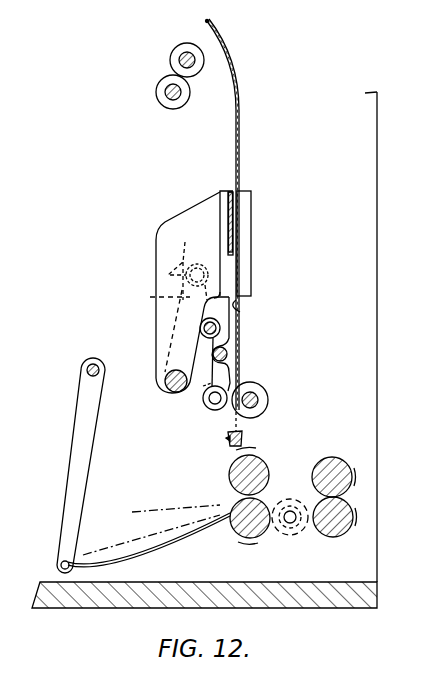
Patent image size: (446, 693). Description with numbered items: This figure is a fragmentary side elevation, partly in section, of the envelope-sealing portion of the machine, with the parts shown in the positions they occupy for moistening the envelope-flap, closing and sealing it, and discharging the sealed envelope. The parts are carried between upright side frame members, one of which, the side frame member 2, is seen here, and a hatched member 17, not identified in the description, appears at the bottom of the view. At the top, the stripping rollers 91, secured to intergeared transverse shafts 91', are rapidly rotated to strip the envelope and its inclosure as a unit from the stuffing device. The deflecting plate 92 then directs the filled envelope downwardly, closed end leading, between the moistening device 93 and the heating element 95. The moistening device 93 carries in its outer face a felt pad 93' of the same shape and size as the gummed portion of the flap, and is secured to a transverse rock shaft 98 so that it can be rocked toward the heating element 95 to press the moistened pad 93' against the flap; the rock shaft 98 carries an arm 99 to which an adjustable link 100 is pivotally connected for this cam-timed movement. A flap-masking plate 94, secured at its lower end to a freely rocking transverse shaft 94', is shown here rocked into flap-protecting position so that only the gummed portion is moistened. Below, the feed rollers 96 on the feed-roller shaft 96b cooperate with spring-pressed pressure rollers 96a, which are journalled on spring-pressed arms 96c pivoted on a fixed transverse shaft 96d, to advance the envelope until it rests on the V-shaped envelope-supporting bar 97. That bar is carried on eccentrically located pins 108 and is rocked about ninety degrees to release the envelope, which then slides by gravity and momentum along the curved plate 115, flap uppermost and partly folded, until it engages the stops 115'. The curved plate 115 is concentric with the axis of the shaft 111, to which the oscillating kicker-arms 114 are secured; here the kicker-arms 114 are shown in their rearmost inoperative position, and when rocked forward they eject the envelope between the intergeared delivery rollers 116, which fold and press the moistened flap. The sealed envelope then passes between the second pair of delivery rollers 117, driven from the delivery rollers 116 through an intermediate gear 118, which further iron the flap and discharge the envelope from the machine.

The side frame member 2 is at (373, 291).
The base 17 is at (268, 581).
The stripping rollers 91 is at (165, 76).
The transverse shafts 91' is at (160, 62).
The deflecting plate 92 is at (235, 92).
The moistening device 93 is at (214, 234).
The felt pad 93' is at (223, 199).
The flap-masking plate 94 is at (253, 307).
The transverse shaft 94' is at (257, 374).
The heating element 95 is at (246, 233).
The feed rollers 96 is at (268, 399).
The pressure rollers 96a is at (210, 407).
The feed-roller shaft 96b is at (254, 393).
The spring-pressed arms 96c is at (210, 375).
The transverse shaft 96d is at (204, 326).
The V-shaped envelope-supporting bar 97 is at (244, 437).
The rock shaft 98 is at (165, 382).
The arm 99 is at (179, 292).
The adjustable link 100 is at (184, 258).
The pins 108 is at (226, 438).
The shaft 111 is at (96, 363).
The kicker-arms 114 is at (92, 460).
The curved plate 115 is at (149, 538).
The stops 115' is at (44, 549).
The delivery rollers 116 is at (232, 505).
The second delivery rollers 117 is at (322, 462).
The intermediate gear 118 is at (285, 535).